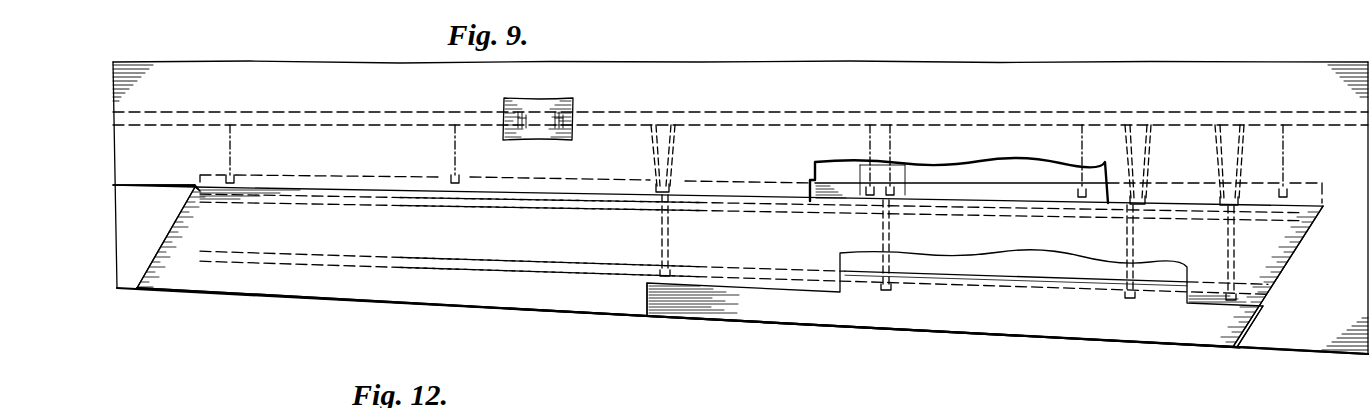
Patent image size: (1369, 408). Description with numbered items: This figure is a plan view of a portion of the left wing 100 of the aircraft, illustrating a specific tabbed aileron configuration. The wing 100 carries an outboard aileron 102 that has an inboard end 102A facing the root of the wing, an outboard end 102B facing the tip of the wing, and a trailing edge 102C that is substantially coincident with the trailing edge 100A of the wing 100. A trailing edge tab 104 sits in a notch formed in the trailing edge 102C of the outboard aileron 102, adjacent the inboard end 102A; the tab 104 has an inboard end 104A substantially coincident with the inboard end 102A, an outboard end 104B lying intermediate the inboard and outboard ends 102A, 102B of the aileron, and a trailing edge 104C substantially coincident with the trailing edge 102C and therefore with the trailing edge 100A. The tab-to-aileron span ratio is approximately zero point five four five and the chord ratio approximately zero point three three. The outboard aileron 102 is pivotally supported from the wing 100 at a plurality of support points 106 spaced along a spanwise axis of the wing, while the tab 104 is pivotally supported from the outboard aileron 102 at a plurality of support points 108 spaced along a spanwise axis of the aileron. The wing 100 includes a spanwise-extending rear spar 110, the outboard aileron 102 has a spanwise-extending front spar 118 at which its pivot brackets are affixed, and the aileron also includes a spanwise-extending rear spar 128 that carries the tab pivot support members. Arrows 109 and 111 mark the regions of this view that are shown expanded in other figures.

The left wing 100 is at (762, 158).
The trailing edge of the wing 100A is at (1302, 354).
The outboard aileron 102 is at (784, 248).
The inboard end of the outboard aileron 102A is at (1290, 258).
The outboard end of the outboard aileron 102B is at (168, 237).
The trailing edge of the outboard aileron 102C is at (465, 308).
The trailing edge tab 104 is at (1066, 319).
The inboard end of the tab 104A is at (1241, 345).
The outboard end of the tab 104B is at (645, 300).
The trailing edge of the tab 104C is at (922, 332).
The support points 106 is at (238, 172).
The support points 108 is at (676, 270).
The arrow 109 is at (884, 82).
The rear spar 110 is at (544, 112).
The arrow 111 is at (687, 90).
The front spar 118 is at (527, 207).
The rear spar 128 is at (564, 262).